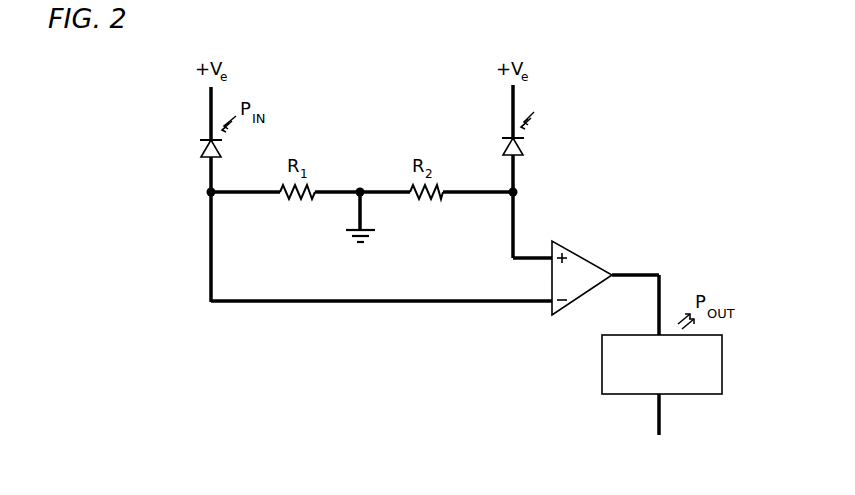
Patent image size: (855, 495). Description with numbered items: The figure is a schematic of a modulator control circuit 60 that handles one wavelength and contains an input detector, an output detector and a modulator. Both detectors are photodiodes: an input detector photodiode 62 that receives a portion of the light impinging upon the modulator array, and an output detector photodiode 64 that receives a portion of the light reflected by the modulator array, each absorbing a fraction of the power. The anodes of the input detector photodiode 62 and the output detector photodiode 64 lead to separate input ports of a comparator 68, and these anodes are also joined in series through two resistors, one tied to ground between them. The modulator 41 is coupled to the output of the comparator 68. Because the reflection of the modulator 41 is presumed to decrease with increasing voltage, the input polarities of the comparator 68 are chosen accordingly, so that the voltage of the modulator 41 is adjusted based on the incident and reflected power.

The modulator control circuit 60 is at (585, 82).
The input detector photodiode 62 is at (205, 146).
The output detector photodiode 64 is at (524, 148).
The comparator 68 is at (583, 259).
The modulator 41 is at (722, 368).